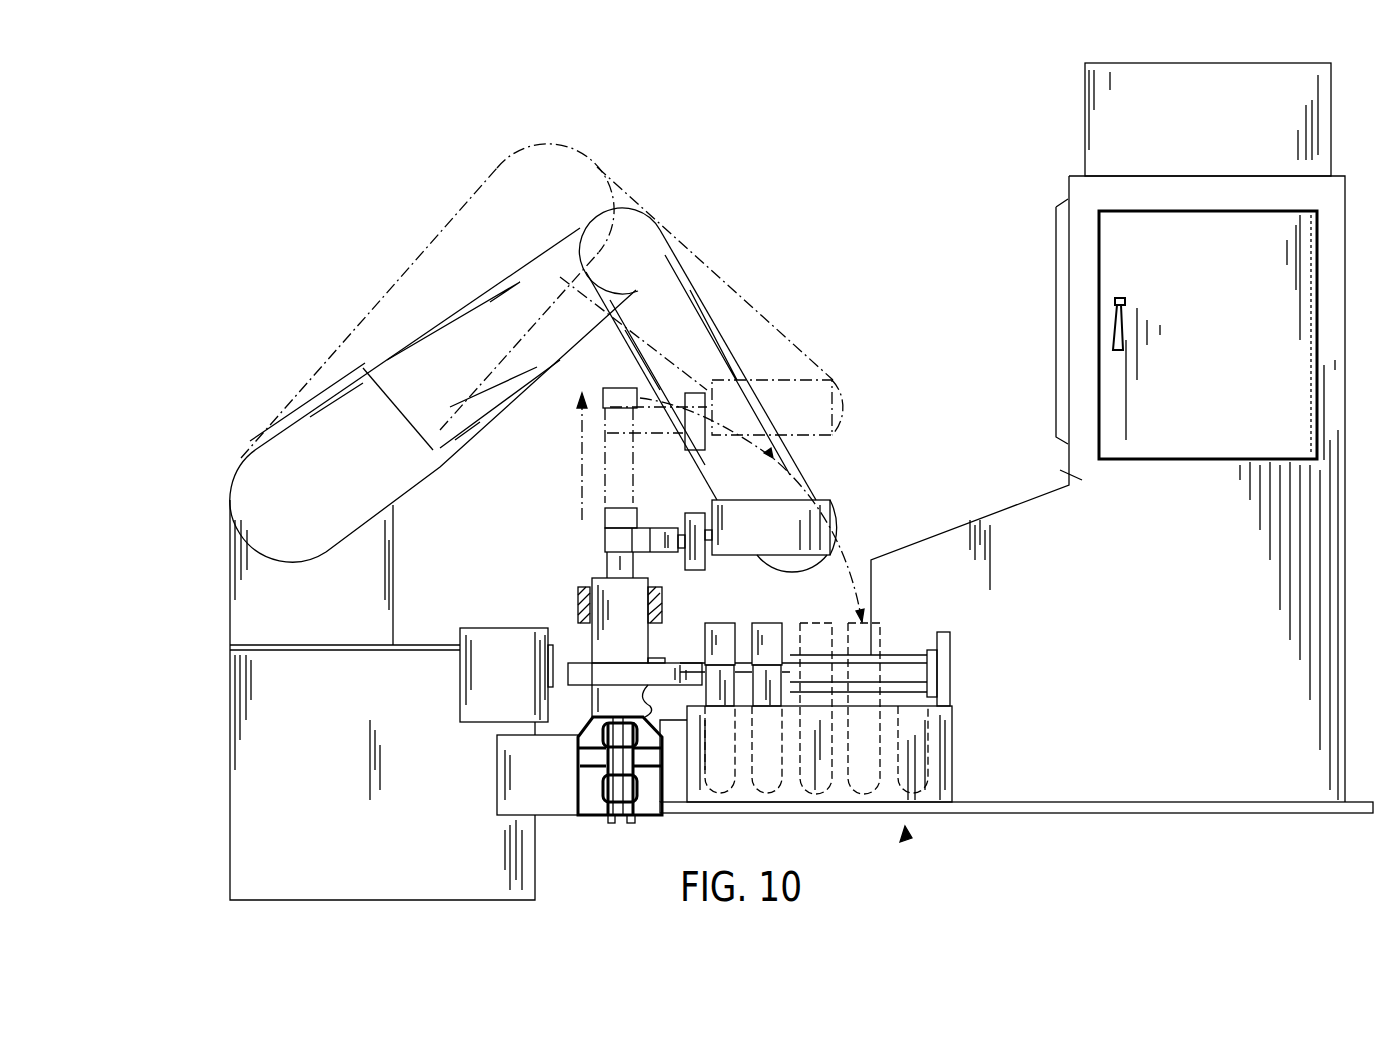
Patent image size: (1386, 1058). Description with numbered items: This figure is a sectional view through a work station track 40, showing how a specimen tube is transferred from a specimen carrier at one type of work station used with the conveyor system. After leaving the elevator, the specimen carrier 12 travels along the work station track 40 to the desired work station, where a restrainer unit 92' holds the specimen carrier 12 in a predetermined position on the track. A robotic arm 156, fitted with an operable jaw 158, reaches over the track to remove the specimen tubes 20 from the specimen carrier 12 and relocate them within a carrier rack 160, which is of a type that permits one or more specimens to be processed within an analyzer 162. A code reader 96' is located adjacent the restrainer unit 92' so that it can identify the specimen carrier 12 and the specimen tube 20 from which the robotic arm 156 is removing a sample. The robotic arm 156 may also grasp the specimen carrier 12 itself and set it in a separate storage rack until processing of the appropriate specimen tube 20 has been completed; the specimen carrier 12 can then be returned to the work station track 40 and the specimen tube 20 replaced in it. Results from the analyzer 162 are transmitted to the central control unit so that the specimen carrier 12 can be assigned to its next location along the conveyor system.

The robotic arm 156 is at (282, 592).
The code reader 96' is at (482, 649).
The operable jaw 158 is at (625, 542).
The specimen tube 20 is at (617, 567).
The specimen carrier 12 is at (622, 625).
The work station track 40 is at (593, 814).
The carrier rack 160 is at (936, 761).
The analyzer 162 is at (1073, 477).
The restrainer unit 92' is at (1016, 852).